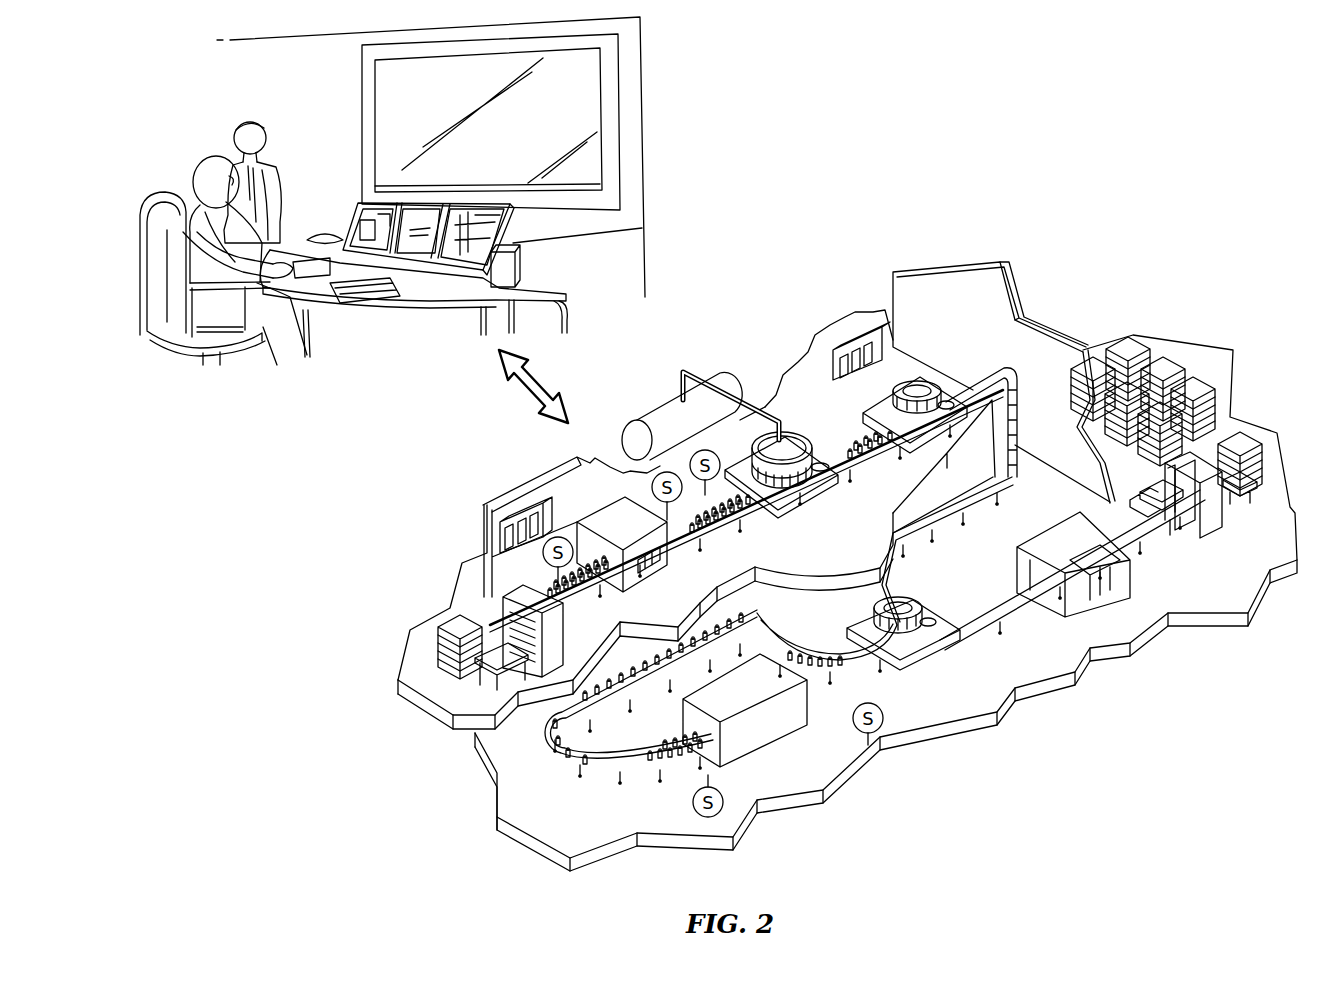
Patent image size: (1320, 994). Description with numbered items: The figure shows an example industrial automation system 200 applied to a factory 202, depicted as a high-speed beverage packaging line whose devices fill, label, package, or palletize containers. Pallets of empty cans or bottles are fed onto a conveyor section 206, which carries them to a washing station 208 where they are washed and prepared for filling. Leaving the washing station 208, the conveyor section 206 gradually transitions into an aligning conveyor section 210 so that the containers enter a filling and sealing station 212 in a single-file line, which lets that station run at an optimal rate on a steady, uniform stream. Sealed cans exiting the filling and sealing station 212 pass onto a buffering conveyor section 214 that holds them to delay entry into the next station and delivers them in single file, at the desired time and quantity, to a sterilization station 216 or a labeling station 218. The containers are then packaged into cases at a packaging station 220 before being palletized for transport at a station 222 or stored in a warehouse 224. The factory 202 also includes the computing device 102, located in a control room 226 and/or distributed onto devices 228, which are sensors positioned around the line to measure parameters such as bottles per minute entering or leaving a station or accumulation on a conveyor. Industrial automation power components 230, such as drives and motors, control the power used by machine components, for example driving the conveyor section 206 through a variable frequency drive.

The computing device 102 is at (333, 207).
The industrial automation system 200 is at (1128, 200).
The factory 202 is at (990, 326).
The conveyor section 206 is at (738, 523).
The washing station 208 is at (647, 580).
The aligning conveyor section 210 is at (770, 508).
The filling and sealing station 212 is at (903, 370).
The buffering conveyor section 214 is at (957, 508).
The sterilization station 216 is at (763, 747).
The labeling station 218 is at (933, 653).
The packaging station 220 is at (1100, 602).
The palletizing station 222 is at (1217, 537).
The warehouse 224 is at (1172, 362).
The control room 226 is at (290, 80).
The devices 228 is at (664, 472).
The industrial automation power components 230 is at (845, 383).